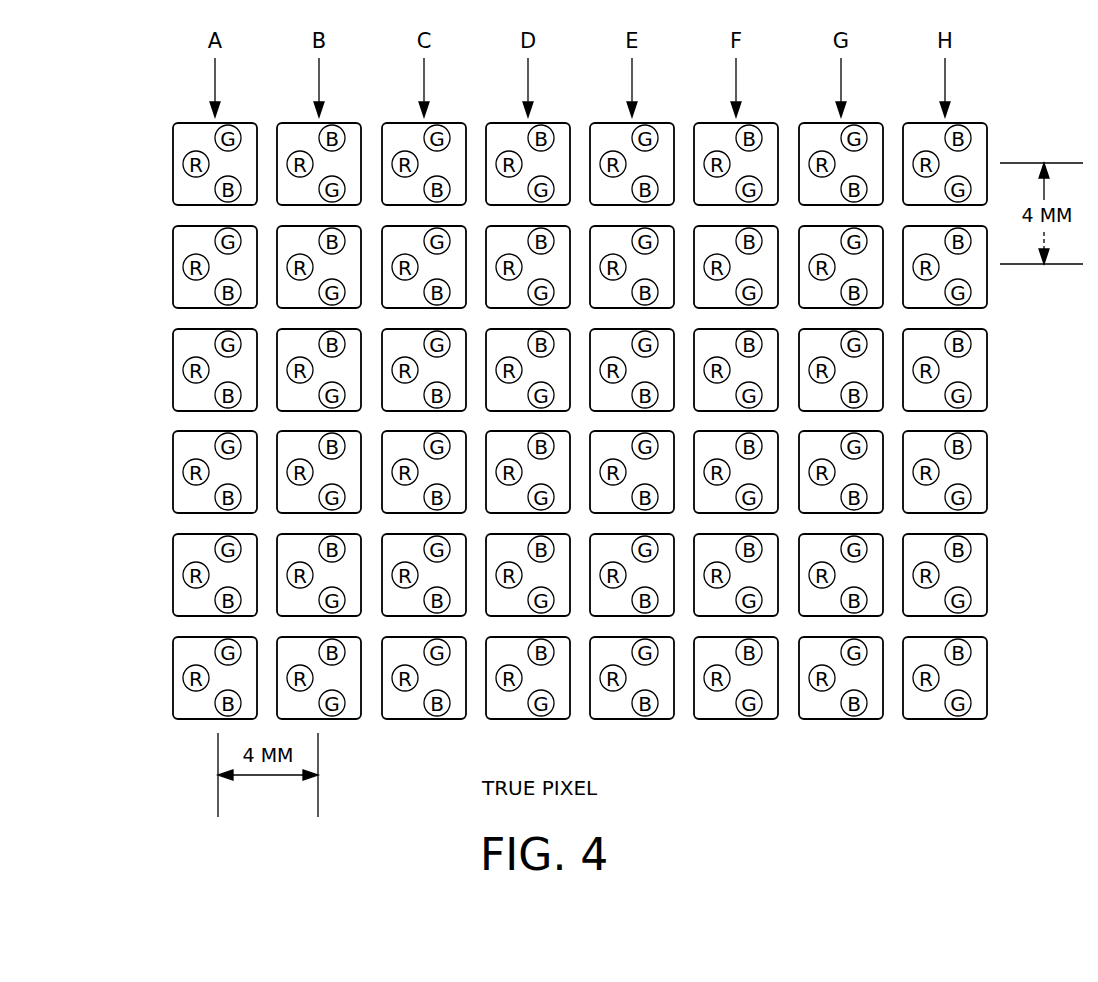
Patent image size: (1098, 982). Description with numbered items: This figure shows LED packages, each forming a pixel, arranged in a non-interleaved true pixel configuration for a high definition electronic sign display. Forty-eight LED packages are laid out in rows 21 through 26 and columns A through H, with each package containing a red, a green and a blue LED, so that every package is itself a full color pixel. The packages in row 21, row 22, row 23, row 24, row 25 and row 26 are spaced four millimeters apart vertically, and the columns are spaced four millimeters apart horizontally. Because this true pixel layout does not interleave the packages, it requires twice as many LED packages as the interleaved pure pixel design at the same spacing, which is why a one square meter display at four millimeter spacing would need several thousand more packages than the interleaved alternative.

The row 21 is at (146, 162).
The row 22 is at (146, 265).
The row 23 is at (146, 368).
The row 24 is at (146, 470).
The row 25 is at (146, 573).
The row 26 is at (146, 676).